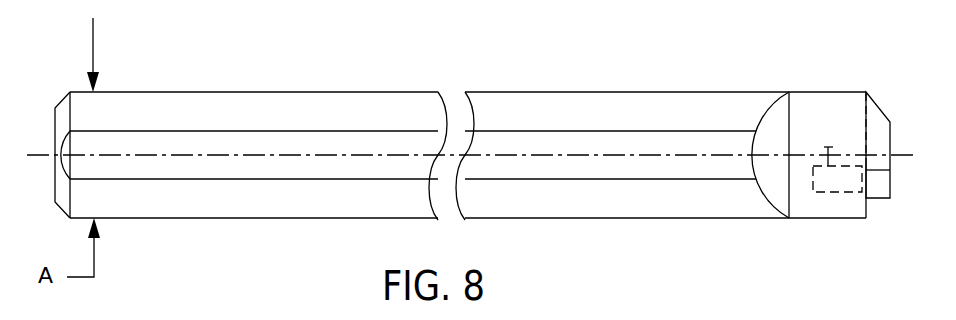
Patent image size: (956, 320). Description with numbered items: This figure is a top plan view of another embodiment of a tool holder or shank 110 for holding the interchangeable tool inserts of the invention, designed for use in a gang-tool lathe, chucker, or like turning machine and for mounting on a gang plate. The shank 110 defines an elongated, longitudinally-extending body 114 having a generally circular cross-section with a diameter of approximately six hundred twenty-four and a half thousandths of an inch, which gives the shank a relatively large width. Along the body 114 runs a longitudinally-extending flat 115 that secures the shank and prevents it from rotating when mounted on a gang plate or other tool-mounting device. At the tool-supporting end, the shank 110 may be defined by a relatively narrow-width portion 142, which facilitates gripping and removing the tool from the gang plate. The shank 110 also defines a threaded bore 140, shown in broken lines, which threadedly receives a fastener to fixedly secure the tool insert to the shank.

The shank 110 is at (520, 87).
The body 114 is at (197, 202).
The flat 115 is at (223, 147).
The threaded bore 140 is at (828, 147).
The narrow-width portion 142 is at (827, 220).